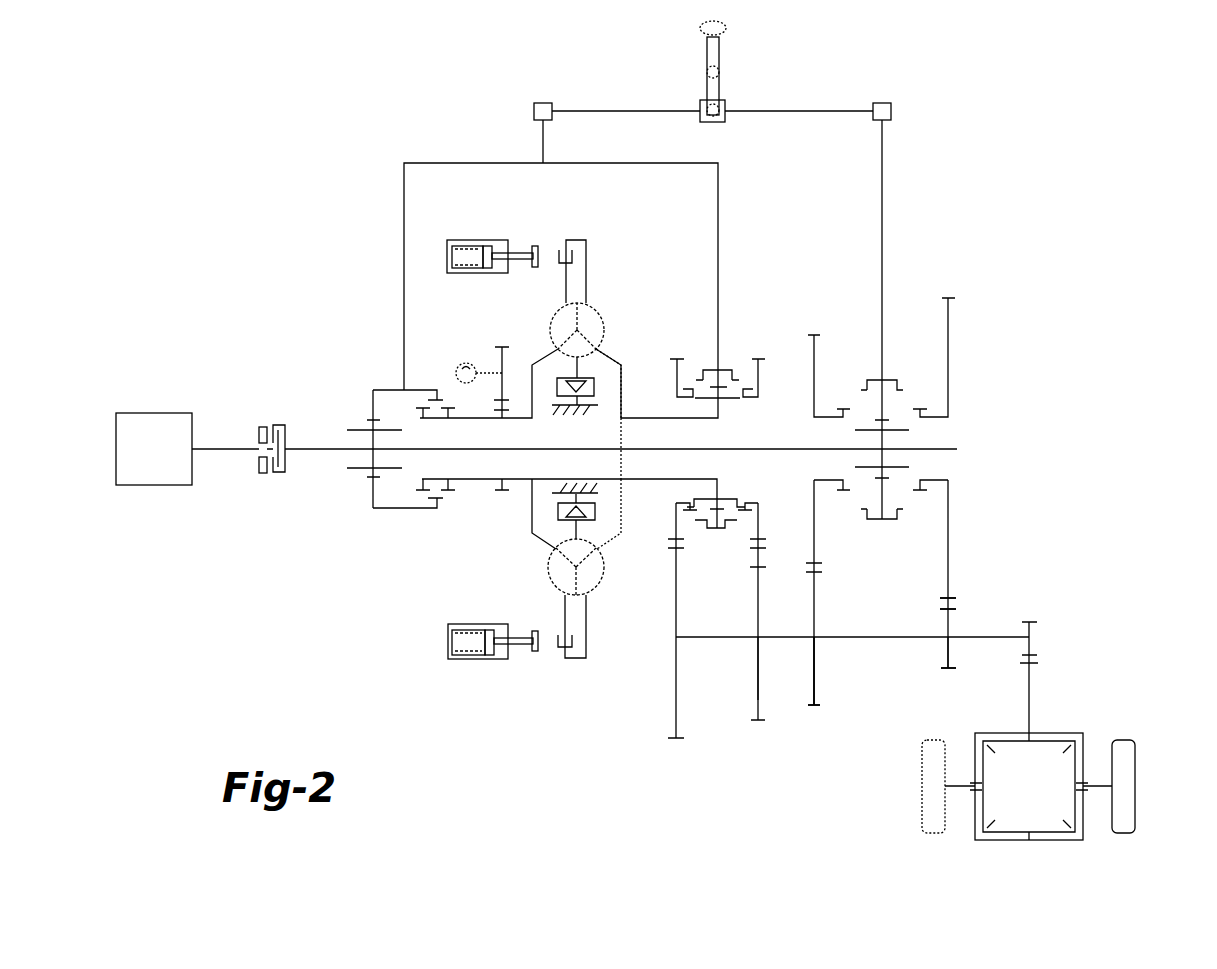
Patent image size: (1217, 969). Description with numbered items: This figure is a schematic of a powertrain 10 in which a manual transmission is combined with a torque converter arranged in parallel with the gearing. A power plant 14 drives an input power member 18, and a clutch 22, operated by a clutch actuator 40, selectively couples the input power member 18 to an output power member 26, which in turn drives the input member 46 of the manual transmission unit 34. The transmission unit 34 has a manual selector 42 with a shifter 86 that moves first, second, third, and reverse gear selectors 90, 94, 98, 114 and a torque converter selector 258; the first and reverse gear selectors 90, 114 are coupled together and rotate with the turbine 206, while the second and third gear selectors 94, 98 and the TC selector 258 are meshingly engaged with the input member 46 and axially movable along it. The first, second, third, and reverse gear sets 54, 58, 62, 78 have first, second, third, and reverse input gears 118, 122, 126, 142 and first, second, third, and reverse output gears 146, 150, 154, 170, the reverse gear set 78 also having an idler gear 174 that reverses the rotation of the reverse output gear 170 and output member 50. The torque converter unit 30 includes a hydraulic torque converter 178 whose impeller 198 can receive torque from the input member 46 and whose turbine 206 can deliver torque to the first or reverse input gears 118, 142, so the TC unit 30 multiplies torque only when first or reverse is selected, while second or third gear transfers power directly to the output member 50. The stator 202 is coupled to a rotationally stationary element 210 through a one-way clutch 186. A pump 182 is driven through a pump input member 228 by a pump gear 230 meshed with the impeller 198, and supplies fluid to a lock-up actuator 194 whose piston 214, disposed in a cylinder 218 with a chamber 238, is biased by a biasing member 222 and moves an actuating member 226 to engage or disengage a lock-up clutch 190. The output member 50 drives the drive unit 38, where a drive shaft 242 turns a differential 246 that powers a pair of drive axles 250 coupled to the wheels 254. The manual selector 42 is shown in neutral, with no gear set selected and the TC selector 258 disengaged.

The powertrain 10 is at (135, 105).
The power plant 14 is at (153, 413).
The input power member 18 is at (233, 458).
The clutch 22 is at (277, 426).
The output power member 26 is at (297, 458).
The torque converter unit 30 is at (520, 720).
The manual transmission unit 34 is at (486, 126).
The drive unit 38 is at (1070, 845).
The clutch actuator 40 is at (260, 430).
The manual selector 42 is at (736, 96).
The input member 46 is at (957, 449).
The output member 50 is at (990, 637).
The first gear set 54 is at (675, 745).
The second gear set 58 is at (815, 712).
The third gear set 62 is at (944, 673).
The reverse gear set 78 is at (757, 724).
The shifter 86 is at (700, 33).
The first gear selector 90 is at (700, 521).
The second gear selector 94 is at (872, 378).
The third gear selector 98 is at (890, 378).
The reverse gear selector 114 is at (725, 530).
The first input gear 118 is at (676, 380).
The second input gear 122 is at (815, 537).
The third input gear 126 is at (950, 355).
The reverse input gear 142 is at (762, 386).
The first output gear 146 is at (676, 722).
The second output gear 150 is at (815, 658).
The third output gear 154 is at (947, 631).
The reverse output gear 170 is at (758, 665).
The idler gear 174 is at (762, 553).
The hydraulic torque converter 178 is at (551, 583).
The pump 182 is at (456, 376).
The one-way clutch 186 is at (558, 508).
The lock-up clutch 190 is at (576, 659).
The lock-up actuator 194 is at (462, 666).
The impeller 198 is at (552, 314).
The stator 202 is at (600, 345).
The turbine 206 is at (598, 308).
The rotationally stationary element 210 is at (616, 478).
The piston 214 is at (488, 246).
The cylinder 218 is at (505, 250).
The biasing member 222 is at (452, 246).
The actuating member 226 is at (536, 246).
The pump input member 228 is at (484, 356).
The pump gear 230 is at (488, 366).
The chamber 238 is at (496, 247).
The drive shaft 242 is at (1029, 688).
The differential 246 is at (997, 733).
The drive axles 250 is at (960, 784).
The wheels 254 is at (922, 786).
The torque converter selector 258 is at (378, 389).